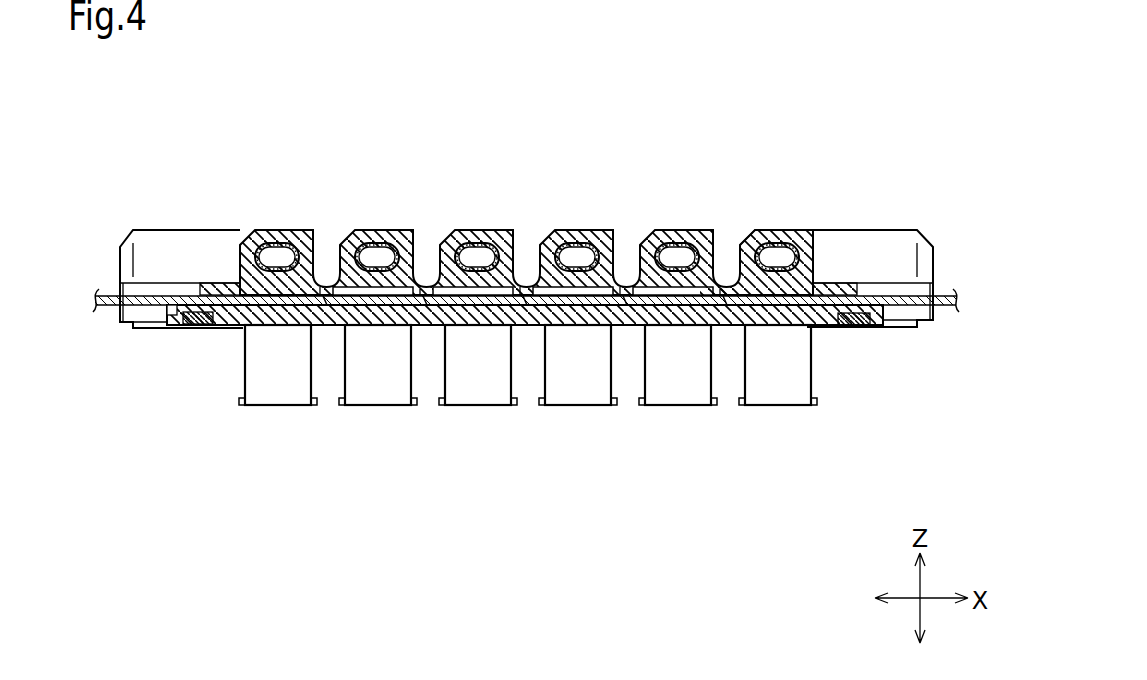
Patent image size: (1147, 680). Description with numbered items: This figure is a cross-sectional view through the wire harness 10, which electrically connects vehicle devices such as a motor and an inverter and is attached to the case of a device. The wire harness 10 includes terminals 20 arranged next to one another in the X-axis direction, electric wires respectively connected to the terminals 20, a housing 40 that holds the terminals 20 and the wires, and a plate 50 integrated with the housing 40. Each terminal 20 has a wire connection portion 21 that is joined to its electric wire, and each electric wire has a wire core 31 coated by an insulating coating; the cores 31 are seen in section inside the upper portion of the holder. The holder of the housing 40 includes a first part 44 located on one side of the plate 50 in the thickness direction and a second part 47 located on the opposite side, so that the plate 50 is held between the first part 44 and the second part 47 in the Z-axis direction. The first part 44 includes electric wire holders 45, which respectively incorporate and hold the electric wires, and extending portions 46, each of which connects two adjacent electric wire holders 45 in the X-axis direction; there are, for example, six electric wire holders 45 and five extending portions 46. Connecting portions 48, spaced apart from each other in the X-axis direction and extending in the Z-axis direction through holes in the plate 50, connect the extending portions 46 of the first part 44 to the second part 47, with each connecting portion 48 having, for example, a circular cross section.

The wire harness 10 is at (842, 137).
The terminal 20 is at (772, 406).
The wire connection portion 21 is at (803, 238).
The wire core 31 is at (792, 253).
The housing 40 is at (900, 230).
The first part 44 is at (526, 227).
The electric wire holder 45 is at (764, 240).
The extending portion 46 is at (725, 292).
The second part 47 is at (672, 315).
The connecting portion 48 is at (323, 298).
The plate 50 is at (903, 326).